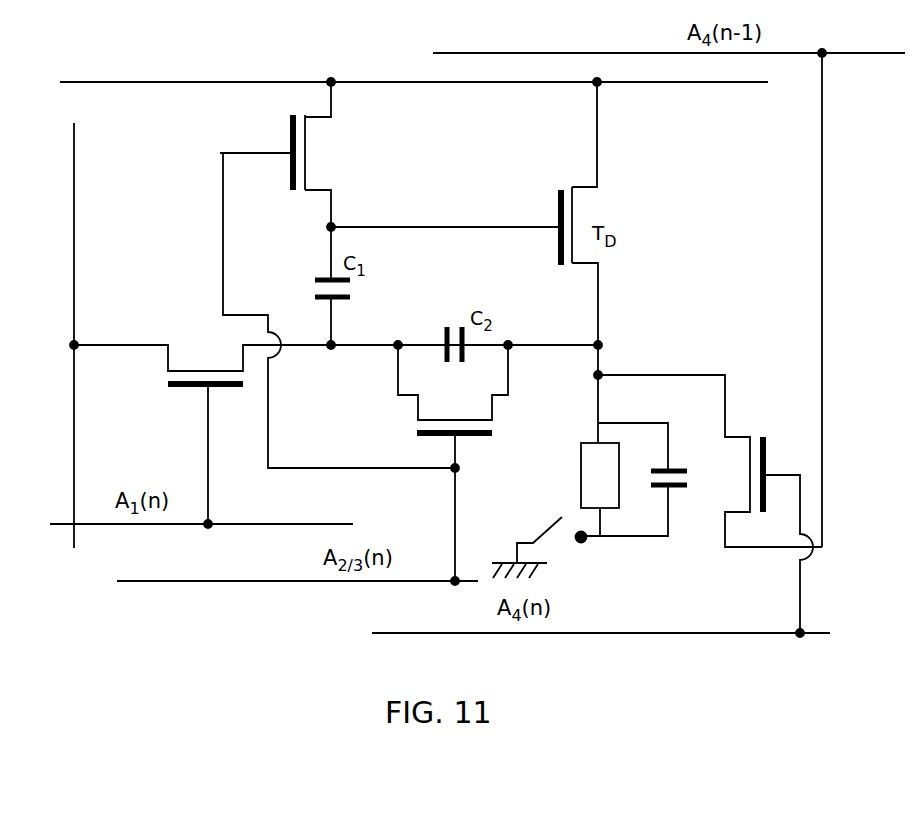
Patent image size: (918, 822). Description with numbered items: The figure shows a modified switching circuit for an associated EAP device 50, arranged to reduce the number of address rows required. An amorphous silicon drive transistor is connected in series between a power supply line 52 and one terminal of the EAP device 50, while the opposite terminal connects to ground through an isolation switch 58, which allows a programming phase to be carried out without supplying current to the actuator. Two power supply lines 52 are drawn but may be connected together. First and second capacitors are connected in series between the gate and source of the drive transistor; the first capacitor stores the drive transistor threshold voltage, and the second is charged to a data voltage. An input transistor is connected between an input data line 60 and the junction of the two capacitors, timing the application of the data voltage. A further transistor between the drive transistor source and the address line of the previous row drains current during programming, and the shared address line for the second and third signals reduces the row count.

The power supply line 52 is at (147, 81).
The input data line 60 is at (73, 262).
The EAP device 50 is at (581, 478).
The isolation switch 58 is at (548, 532).